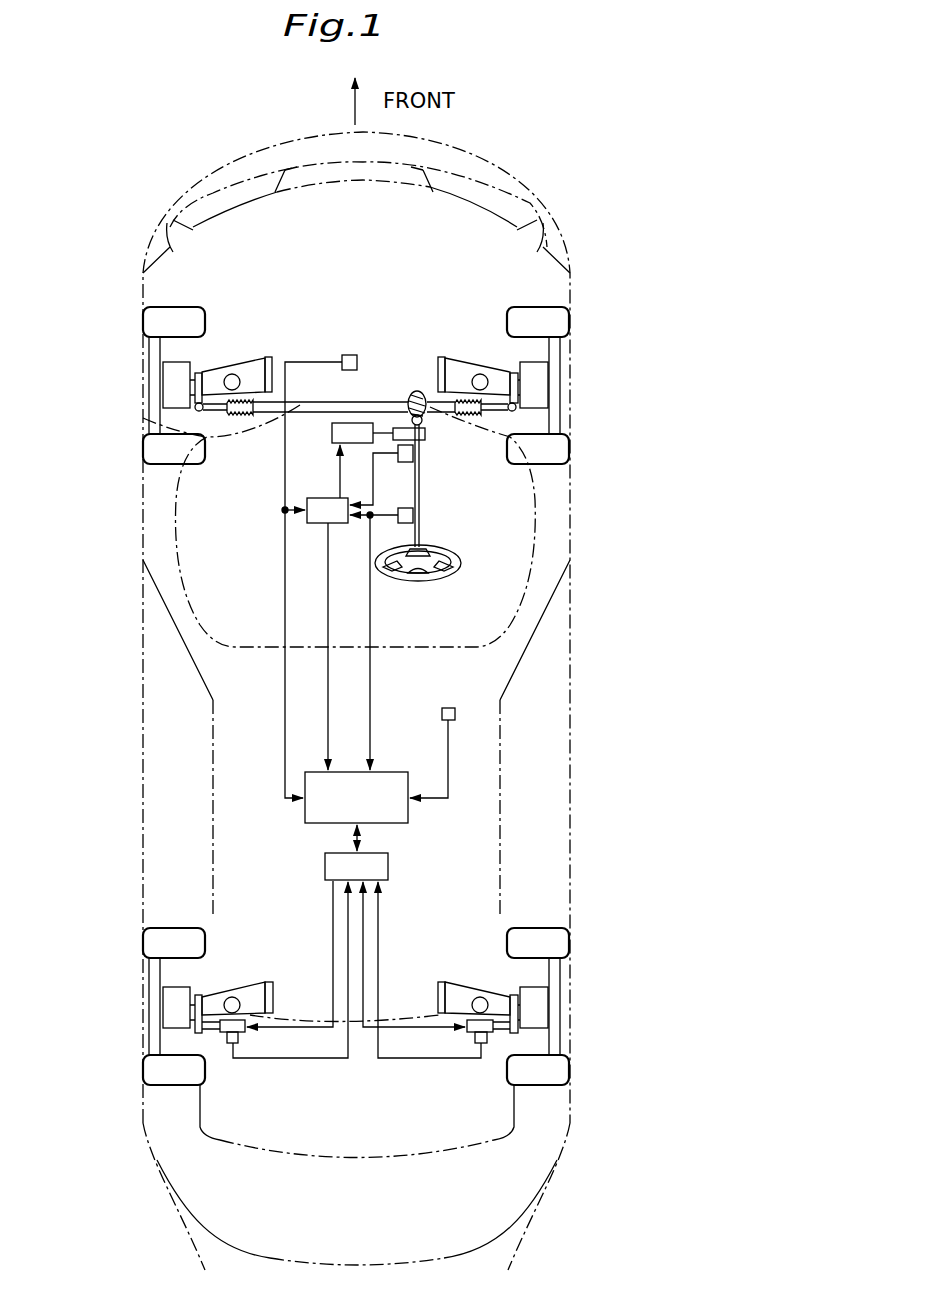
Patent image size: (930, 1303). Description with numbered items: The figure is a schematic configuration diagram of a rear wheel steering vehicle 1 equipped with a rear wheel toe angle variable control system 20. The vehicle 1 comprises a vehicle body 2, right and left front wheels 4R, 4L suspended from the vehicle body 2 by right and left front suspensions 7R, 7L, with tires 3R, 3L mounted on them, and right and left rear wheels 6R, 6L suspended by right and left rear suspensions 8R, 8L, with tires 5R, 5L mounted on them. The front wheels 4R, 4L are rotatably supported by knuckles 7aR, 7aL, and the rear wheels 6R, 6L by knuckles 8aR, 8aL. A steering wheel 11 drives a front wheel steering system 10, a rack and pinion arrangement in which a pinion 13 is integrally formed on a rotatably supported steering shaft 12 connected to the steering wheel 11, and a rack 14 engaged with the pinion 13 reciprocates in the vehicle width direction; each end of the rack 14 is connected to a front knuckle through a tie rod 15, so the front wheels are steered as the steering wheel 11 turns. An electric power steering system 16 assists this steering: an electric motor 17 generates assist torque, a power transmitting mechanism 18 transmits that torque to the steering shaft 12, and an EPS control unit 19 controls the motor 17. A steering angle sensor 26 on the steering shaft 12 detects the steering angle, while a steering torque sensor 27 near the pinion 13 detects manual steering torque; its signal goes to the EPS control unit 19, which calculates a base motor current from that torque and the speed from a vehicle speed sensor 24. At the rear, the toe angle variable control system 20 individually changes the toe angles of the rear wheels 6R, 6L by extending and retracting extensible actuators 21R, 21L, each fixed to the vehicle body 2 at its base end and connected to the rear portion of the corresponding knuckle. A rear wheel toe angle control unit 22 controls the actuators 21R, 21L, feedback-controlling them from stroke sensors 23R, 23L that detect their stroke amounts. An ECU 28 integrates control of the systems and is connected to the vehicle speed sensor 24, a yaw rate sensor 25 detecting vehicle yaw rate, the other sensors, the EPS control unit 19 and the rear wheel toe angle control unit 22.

The rear wheel steering vehicle 1 is at (580, 131).
The vehicle body 2 is at (570, 252).
The tire 3L is at (156, 454).
The tire 3R is at (556, 454).
The front wheel 4L is at (152, 345).
The front wheel 4R is at (563, 347).
The tire 5L is at (150, 1072).
The tire 5R is at (563, 1073).
The rear wheel 6L is at (150, 992).
The rear wheel 6R is at (565, 993).
The front suspension 7L is at (262, 356).
The front suspension 7R is at (457, 354).
The knuckle 7aL is at (198, 380).
The knuckle 7aR is at (515, 372).
The rear suspension 8L is at (243, 980).
The rear suspension 8R is at (460, 979).
The knuckle 8aL is at (197, 992).
The knuckle 8aR is at (514, 992).
The front wheel steering system 10 is at (494, 476).
The steering wheel 11 is at (428, 580).
The steering shaft 12 is at (420, 494).
The pinion 13 is at (416, 392).
The rack 14 is at (378, 401).
The tie rod 15 is at (195, 413).
The electric power steering system 16 is at (282, 478).
The electric motor 17 is at (332, 429).
The power transmitting mechanism 18 is at (428, 433).
The EPS control unit 19 is at (313, 525).
The rear wheel toe angle variable control system 20 is at (536, 904).
The extensible actuator 21L is at (213, 1033).
The extensible actuator 21R is at (500, 1033).
The rear wheel toe angle control unit 22 is at (330, 853).
The stroke sensor 23L is at (229, 1040).
The stroke sensor 23R is at (484, 1042).
The vehicle speed sensor 24 is at (349, 355).
The yaw rate sensor 25 is at (448, 708).
The steering angle sensor 26 is at (414, 516).
The steering torque sensor 27 is at (413, 458).
The ECU 28 is at (400, 776).